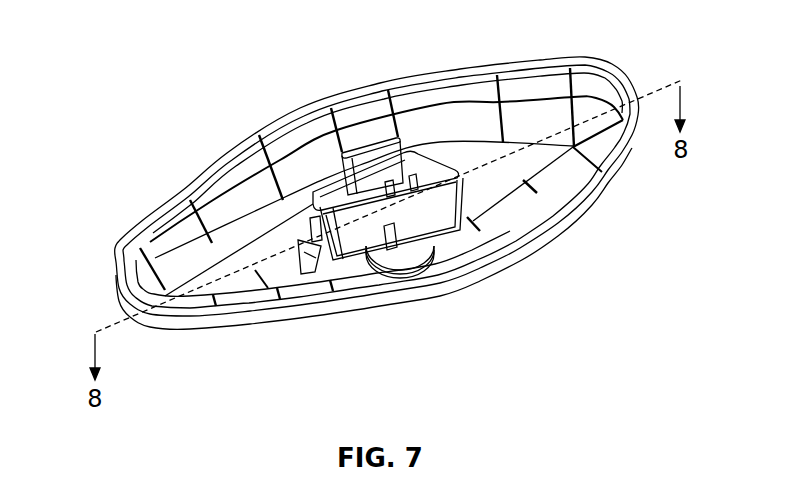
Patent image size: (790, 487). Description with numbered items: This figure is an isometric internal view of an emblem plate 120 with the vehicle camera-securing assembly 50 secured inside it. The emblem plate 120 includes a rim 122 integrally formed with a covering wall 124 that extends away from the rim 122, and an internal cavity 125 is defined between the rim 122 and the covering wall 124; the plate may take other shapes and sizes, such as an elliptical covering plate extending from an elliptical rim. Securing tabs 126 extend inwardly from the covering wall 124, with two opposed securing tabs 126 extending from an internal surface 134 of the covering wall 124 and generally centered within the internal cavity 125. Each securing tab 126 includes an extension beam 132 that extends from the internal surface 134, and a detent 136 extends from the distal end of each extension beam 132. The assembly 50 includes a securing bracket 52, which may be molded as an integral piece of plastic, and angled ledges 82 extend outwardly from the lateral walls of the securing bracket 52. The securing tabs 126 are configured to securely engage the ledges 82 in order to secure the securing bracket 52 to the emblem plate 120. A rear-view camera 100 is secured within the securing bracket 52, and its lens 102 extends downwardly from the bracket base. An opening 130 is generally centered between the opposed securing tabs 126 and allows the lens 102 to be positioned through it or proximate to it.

The vehicle camera-securing assembly 50 is at (478, 193).
The securing bracket 52 is at (455, 248).
The angled ledges 82 is at (330, 260).
The rear-view camera 100 is at (402, 134).
The lens 102 is at (397, 258).
The emblem plate 120 is at (145, 217).
The rim 122 is at (210, 329).
The covering wall 124 is at (176, 247).
The internal cavity 125 is at (270, 197).
The securing tabs 126 is at (430, 196).
The opening 130 is at (425, 262).
The extension beam 132 is at (328, 268).
The internal surface 134 is at (262, 278).
The detent 136 is at (303, 227).